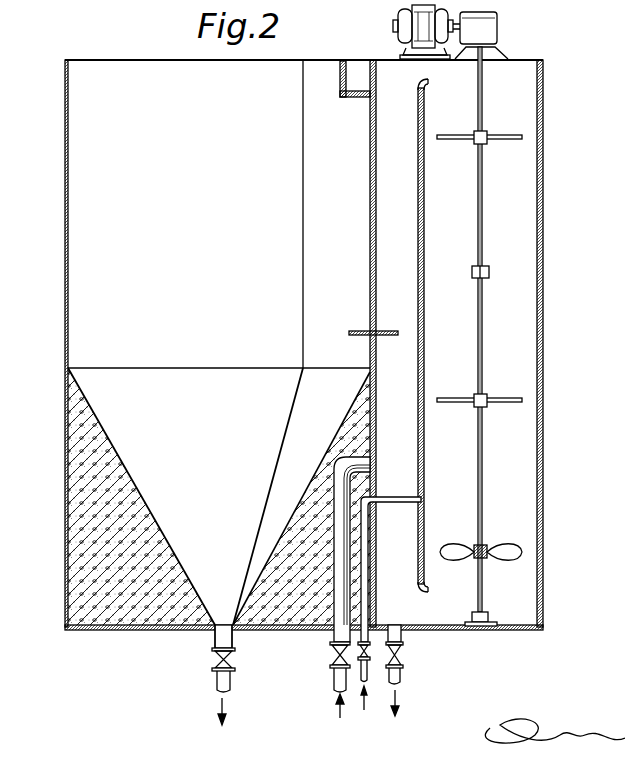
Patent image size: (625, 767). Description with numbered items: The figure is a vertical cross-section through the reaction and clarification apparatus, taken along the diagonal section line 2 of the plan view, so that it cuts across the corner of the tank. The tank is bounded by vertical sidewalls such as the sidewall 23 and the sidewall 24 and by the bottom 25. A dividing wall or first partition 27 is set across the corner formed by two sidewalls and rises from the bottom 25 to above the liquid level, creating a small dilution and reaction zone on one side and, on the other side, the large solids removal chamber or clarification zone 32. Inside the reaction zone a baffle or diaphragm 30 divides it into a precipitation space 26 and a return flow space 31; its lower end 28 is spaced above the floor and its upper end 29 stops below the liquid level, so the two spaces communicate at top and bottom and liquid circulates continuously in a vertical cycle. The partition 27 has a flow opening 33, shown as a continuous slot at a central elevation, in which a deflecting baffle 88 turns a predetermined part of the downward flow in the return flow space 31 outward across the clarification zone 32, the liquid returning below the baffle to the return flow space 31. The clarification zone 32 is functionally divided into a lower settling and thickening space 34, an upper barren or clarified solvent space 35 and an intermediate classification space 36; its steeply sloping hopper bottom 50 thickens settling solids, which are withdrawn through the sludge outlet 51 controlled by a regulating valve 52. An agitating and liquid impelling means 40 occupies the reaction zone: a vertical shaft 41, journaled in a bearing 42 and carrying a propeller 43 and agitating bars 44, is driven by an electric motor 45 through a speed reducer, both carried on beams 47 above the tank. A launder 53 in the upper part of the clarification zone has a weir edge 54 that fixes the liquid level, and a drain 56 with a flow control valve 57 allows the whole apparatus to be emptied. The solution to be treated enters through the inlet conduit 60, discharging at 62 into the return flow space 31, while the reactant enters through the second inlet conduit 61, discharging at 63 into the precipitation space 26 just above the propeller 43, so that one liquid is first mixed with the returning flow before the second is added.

The section line 2 is at (116, 0).
The vertical sidewall 23 is at (68, 228).
The vertical sidewall 24 is at (541, 381).
The bottom 25 is at (82, 634).
The precipitation space 26 is at (541, 240).
The dividing wall or partition 27 is at (370, 251).
The lower end of diaphragm 28 is at (426, 588).
The upper end of diaphragm 29 is at (424, 106).
The baffle or diaphragm 30 is at (424, 198).
The return flow space 31 is at (407, 238).
The solids removal chamber or clarification zone 32 is at (91, 118).
The flow opening 33 is at (373, 318).
The settling and thickening space 34 is at (140, 452).
The barren or clarified solvent space 35 is at (84, 171).
The classification space 36 is at (93, 357).
The agitating and liquid impelling means 40 is at (484, 80).
The shaft 41 is at (482, 325).
The bearing 42 is at (490, 612).
The propeller 43 is at (521, 552).
The agitating bars 44 is at (522, 146).
The electric motor 45 is at (418, 23).
The beams 47 is at (540, 60).
The hopper bottom 50 is at (140, 498).
The sludge outlet 51 is at (213, 636).
The regulating valve 52 is at (212, 662).
The launder 53 is at (356, 88).
The weir edge 54 is at (340, 66).
The drain 56 is at (397, 625).
The flow control valve 57 is at (404, 655).
The inlet conduit 60 is at (310, 622).
The second inlet conduit 61 is at (368, 549).
The discharge of first inlet 62 is at (378, 460).
The discharge of second inlet 63 is at (428, 497).
The deflecting baffle 88 is at (386, 333).